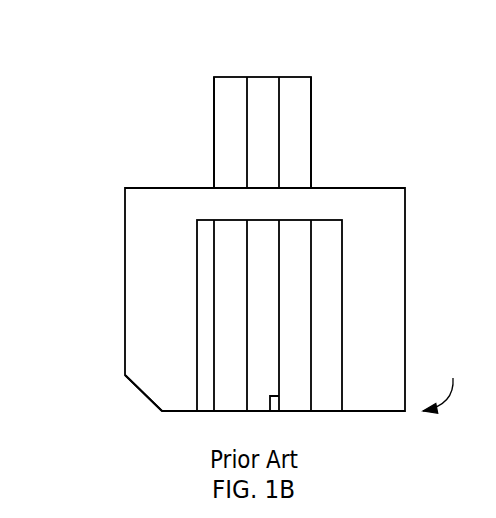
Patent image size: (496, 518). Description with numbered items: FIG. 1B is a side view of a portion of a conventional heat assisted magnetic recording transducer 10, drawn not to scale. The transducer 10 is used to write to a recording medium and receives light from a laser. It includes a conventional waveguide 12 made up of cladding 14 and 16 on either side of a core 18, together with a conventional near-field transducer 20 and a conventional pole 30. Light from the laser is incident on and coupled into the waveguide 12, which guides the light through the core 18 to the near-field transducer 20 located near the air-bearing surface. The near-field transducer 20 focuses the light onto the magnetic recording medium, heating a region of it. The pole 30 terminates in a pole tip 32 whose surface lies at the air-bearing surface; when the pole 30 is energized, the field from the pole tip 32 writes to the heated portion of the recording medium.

The heat assisted magnetic recording transducer 10 is at (248, 56).
The waveguide 12 is at (238, 241).
The cladding 14 is at (311, 159).
The cladding 16 is at (214, 163).
The core 18 is at (280, 127).
The near-field transducer 20 is at (275, 411).
The pole 30 is at (125, 360).
The pole tip 32 is at (158, 418).